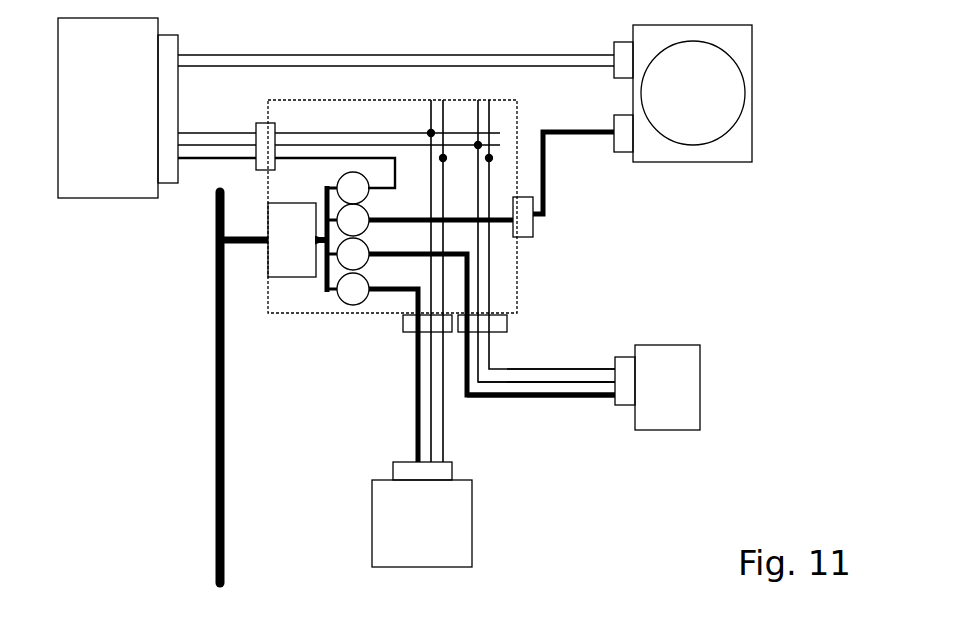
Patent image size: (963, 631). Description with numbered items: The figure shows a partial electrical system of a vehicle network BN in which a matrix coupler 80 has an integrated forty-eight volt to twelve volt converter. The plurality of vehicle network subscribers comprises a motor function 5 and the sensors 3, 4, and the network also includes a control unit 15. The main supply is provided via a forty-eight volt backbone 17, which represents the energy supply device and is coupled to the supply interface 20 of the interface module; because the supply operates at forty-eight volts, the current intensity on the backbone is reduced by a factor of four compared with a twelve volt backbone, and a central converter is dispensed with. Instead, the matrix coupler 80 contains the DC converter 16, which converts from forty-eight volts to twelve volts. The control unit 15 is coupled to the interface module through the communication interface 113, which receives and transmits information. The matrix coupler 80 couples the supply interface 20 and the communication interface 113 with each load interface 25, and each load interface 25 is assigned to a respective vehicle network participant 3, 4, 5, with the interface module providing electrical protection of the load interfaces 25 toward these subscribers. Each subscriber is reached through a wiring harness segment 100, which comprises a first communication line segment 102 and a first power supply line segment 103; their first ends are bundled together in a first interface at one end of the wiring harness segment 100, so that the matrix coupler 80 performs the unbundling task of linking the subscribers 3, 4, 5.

The control unit 15 is at (336, 108).
The communication interface 113 is at (259, 121).
The matrix coupler 80 is at (441, 281).
The DC converter 16 is at (266, 268).
The supply interface 20 is at (261, 226).
The 48 V backbone 17 is at (243, 387).
The load interface 25 is at (536, 228).
The motor function 5 is at (683, 93).
The sensor 4 is at (657, 387).
The sensor 3 is at (422, 514).
The wiring harness segment 100 is at (595, 348).
The first communication line segment 102 is at (582, 383).
The first power supply line segment 103 is at (547, 403).
The vehicle network BN is at (740, 236).